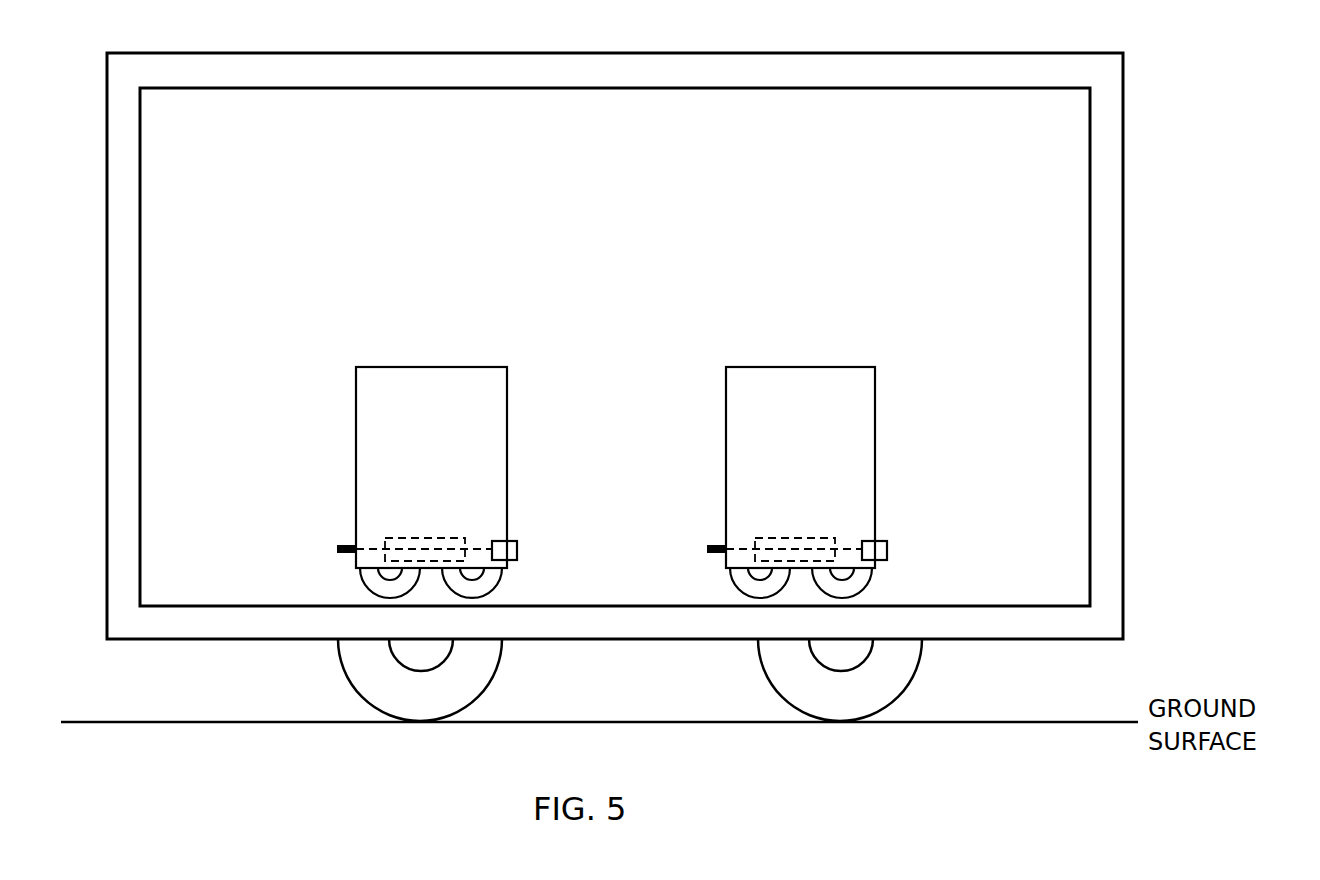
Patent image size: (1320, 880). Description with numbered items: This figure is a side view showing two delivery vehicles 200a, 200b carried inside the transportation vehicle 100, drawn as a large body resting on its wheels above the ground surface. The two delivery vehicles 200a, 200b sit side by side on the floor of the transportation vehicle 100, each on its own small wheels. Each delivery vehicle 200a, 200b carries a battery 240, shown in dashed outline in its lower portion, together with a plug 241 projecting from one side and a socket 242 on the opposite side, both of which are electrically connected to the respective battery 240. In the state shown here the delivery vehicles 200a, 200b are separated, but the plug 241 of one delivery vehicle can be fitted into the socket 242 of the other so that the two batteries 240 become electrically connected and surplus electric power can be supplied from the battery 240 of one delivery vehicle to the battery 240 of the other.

The transportation vehicle 100 is at (1124, 370).
The delivery vehicle 200a is at (476, 375).
The delivery vehicle 200b is at (845, 375).
The battery 240 is at (438, 537).
The plug 241 is at (350, 543).
The socket 242 is at (518, 548).